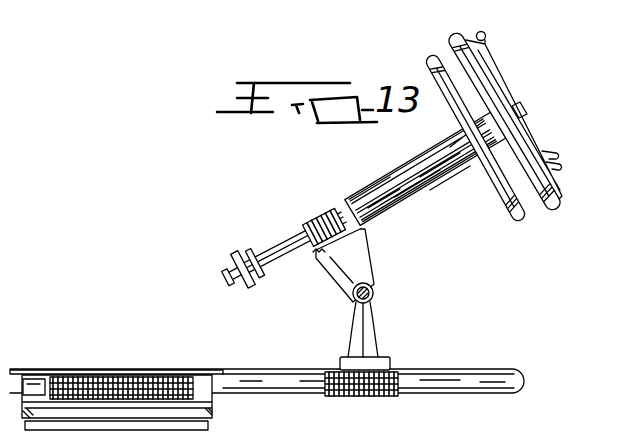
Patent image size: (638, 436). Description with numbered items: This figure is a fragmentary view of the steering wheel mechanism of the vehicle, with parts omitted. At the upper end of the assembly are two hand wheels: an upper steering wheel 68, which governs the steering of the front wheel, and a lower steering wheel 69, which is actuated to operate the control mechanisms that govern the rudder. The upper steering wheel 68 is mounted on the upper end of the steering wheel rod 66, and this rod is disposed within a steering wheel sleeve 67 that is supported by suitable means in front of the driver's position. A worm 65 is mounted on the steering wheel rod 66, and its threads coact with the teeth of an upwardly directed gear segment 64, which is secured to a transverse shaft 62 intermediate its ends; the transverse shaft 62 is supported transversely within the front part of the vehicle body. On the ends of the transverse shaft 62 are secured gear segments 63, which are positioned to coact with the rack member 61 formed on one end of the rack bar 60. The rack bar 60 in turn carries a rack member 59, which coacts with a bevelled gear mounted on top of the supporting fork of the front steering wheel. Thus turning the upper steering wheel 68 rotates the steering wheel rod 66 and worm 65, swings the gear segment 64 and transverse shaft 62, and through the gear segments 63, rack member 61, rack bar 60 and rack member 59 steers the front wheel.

The rack member 59 is at (113, 377).
The rack bar 60 is at (278, 382).
The rack member 61 is at (365, 397).
The transverse shaft 62 is at (372, 300).
The gear segment 63 is at (362, 332).
The upwardly directed gear segment 64 is at (355, 255).
The worm 65 is at (320, 208).
The steering wheel rod 66 is at (270, 255).
The steering wheel sleeve 67 is at (386, 187).
The upper steering wheel 68 is at (565, 193).
The lower steering wheel 69 is at (429, 61).